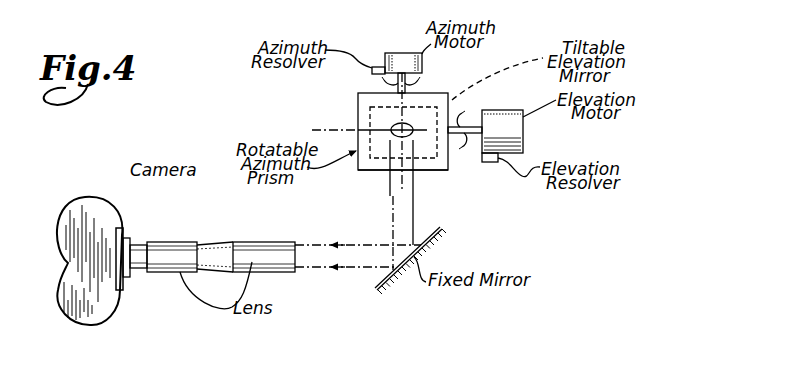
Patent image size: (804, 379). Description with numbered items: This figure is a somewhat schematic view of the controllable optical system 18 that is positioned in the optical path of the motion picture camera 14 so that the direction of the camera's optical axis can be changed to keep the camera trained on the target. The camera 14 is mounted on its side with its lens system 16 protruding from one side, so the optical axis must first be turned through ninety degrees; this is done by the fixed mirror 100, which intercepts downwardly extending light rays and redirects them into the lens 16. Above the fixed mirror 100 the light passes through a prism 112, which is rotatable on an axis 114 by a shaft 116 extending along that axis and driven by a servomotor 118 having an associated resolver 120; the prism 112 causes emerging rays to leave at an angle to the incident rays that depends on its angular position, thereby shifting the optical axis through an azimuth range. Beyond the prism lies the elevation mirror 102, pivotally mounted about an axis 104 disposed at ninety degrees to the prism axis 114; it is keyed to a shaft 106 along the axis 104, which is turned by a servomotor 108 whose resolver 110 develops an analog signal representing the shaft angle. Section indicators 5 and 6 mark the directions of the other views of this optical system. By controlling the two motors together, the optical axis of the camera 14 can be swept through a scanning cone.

The motion picture camera 14 is at (113, 250).
The lens system 16 is at (212, 240).
The fixed mirror 100 is at (437, 254).
The elevation mirror 102 is at (389, 146).
The pivot axis 104 is at (369, 120).
The shaft 106 is at (487, 116).
The servomotor 108 is at (530, 131).
The resolver 110 is at (496, 177).
The prism 112 is at (409, 185).
The axis 114 is at (358, 171).
The shaft 116 is at (423, 81).
The servomotor 118 is at (433, 62).
The resolver 120 is at (354, 79).
The controllable optical system 18 is at (515, 54).
The section view 5 indicator 5 is at (365, 22).
The section view 6 indicator 6 is at (266, 124).